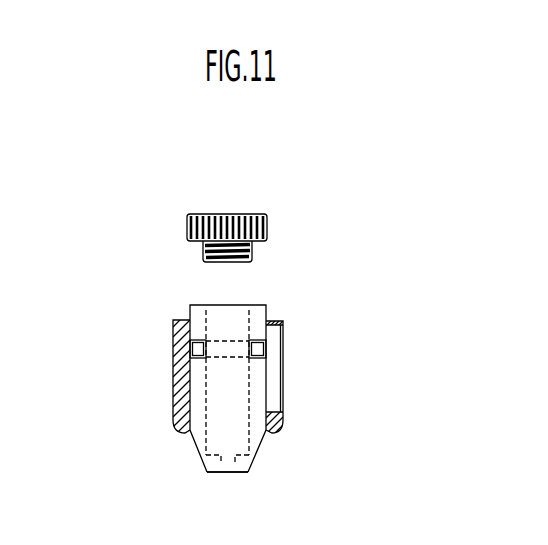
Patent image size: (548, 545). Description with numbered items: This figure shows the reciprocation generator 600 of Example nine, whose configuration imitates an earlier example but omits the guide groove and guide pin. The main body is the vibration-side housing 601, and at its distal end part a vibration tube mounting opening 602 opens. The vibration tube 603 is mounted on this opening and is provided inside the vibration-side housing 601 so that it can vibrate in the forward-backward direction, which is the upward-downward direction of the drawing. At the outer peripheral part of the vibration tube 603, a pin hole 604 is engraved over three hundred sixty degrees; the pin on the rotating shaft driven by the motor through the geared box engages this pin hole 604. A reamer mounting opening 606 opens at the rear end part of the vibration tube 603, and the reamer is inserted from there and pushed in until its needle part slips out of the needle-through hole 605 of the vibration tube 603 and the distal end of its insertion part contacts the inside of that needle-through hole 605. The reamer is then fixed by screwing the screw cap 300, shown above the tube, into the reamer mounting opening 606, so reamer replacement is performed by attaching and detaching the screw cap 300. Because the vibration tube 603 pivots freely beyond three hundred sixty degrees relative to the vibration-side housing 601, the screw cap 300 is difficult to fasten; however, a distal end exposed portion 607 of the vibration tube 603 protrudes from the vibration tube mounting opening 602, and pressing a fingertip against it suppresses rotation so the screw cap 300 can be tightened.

The screw cap 300 is at (233, 213).
The reciprocation generator 600 is at (363, 268).
The vibration-side housing 601 is at (183, 403).
The vibration tube mounting opening 602 is at (189, 433).
The vibration tube 603 is at (213, 464).
The pin hole 604 is at (193, 350).
The needle-through hole 605 is at (247, 470).
The reamer mounting opening 606 is at (191, 312).
The distal end exposed portion 607 is at (258, 450).